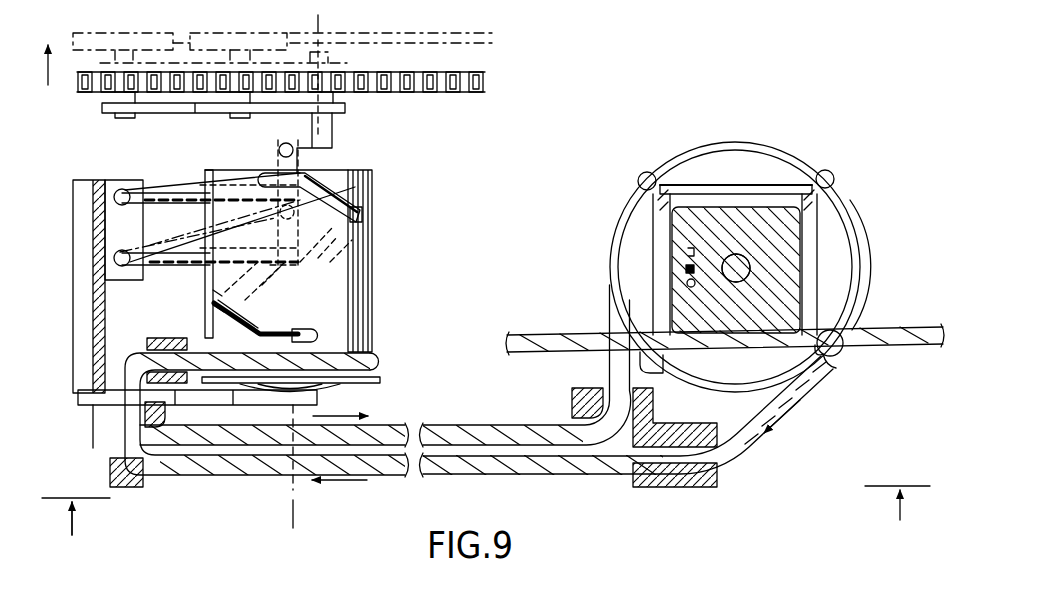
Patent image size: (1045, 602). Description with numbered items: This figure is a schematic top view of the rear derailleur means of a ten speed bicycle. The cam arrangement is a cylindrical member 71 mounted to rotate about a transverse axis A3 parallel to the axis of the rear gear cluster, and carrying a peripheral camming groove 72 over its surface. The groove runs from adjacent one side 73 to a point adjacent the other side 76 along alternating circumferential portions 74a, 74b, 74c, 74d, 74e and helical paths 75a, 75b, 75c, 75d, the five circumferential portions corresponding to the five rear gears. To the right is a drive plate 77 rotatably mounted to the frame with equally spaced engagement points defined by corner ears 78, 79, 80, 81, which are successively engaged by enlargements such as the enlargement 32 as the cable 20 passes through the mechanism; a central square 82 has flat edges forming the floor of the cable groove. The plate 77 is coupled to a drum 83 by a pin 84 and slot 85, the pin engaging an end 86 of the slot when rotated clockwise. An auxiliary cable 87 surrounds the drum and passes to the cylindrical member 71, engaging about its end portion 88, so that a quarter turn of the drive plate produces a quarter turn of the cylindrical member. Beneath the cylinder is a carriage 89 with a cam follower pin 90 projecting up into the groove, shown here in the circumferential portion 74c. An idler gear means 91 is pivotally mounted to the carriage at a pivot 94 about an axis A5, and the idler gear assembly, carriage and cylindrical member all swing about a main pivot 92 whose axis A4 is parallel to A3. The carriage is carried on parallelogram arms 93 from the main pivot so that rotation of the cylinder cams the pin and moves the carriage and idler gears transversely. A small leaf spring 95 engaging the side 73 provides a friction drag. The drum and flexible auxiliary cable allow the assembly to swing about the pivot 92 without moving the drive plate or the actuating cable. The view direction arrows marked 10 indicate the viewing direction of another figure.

The idler gear means 91 is at (90, 96).
The pivoting of the idler gear assembly 94 is at (346, 108).
The axis A5 is at (322, 22).
The other side 76 is at (322, 165).
The carriage 89 is at (290, 143).
The cam follower pin 90 is at (298, 202).
The circumferential portion 74e is at (270, 178).
The helical path 75d is at (322, 192).
The circumferential portion 74d is at (363, 214).
The cylindrical member 71 is at (373, 312).
The arms 93 is at (188, 200).
The main pivot 92 is at (75, 350).
The peripheral camming groove 72 is at (250, 330).
The circumferential portion 74a is at (303, 330).
The helical path 75a is at (237, 326).
The helical path 75b is at (216, 291).
The circumferential portion 74b is at (218, 308).
The circumferential portion 74c is at (279, 272).
The helical path 75c is at (335, 258).
The end portion 88 is at (380, 351).
The one side 73 is at (377, 385).
The leaf spring 95 is at (337, 386).
The axis A4 is at (92, 424).
The transverse axis A3 is at (294, 515).
The auxiliary cable 87 is at (731, 438).
The view direction of FIG. 10 is at (489, 530).
The ear 81 is at (807, 164).
The drum 83 is at (833, 268).
The ear 80 is at (638, 195).
The drive plate 77 is at (741, 191).
The central square 82 is at (674, 308).
The end of the slot 86 is at (686, 252).
The pin 84 is at (686, 270).
The slot 85 is at (688, 284).
The cable 20 is at (900, 347).
The enlargement 32 is at (846, 331).
The ear 78 is at (841, 357).
The ear 79 is at (660, 360).